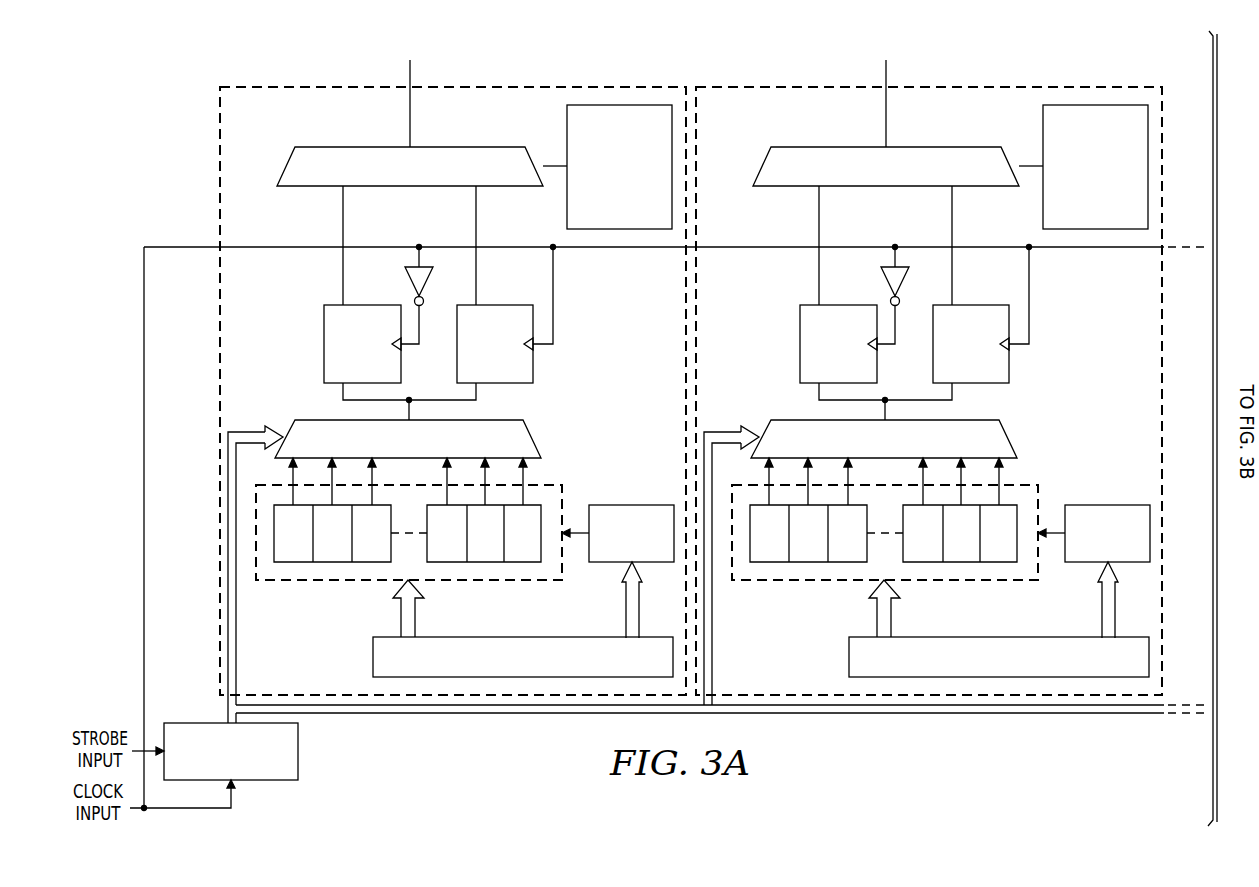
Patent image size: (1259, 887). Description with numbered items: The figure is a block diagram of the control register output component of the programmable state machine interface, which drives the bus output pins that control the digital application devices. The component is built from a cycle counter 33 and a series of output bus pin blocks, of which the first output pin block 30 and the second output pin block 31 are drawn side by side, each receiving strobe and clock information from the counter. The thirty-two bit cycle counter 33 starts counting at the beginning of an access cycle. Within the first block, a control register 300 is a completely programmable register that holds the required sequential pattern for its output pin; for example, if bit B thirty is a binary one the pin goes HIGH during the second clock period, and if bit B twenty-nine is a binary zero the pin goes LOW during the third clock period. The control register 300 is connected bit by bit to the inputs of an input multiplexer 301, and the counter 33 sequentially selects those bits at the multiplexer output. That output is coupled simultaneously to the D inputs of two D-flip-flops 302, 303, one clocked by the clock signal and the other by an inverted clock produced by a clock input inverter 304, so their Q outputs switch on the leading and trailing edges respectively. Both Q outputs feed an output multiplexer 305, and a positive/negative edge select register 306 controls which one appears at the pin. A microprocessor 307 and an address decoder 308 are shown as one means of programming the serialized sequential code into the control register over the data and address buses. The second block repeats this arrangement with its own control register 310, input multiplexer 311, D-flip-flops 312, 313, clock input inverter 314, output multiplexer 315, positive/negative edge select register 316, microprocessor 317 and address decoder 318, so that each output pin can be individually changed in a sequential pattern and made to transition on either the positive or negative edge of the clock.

The output pin 1 block 30 is at (575, 87).
The output pin 2 block 31 is at (929, 367).
The 32-bit cycle counter 33 is at (300, 754).
The control register 300 is at (275, 582).
The input multiplexer 301 is at (536, 438).
The D-flip-flop 302 is at (324, 343).
The D-flip-flop 303 is at (533, 366).
The clock input inverter 304 is at (405, 281).
The output multiplexer 305 is at (348, 146).
The positive/negative edge select register 306 is at (567, 204).
The microprocessor 307 is at (373, 654).
The address decoder 308 is at (632, 504).
The control register 310 is at (882, 558).
The input multiplexer 311 is at (911, 436).
The D-flip-flop 312 is at (808, 344).
The D-flip-flop 313 is at (1002, 315).
The clock input inverter 314 is at (869, 295).
The output multiplexer 315 is at (886, 143).
The positive/negative edge select register 316 is at (1066, 167).
The microprocessor 317 is at (970, 657).
The address decoder 318 is at (1094, 504).